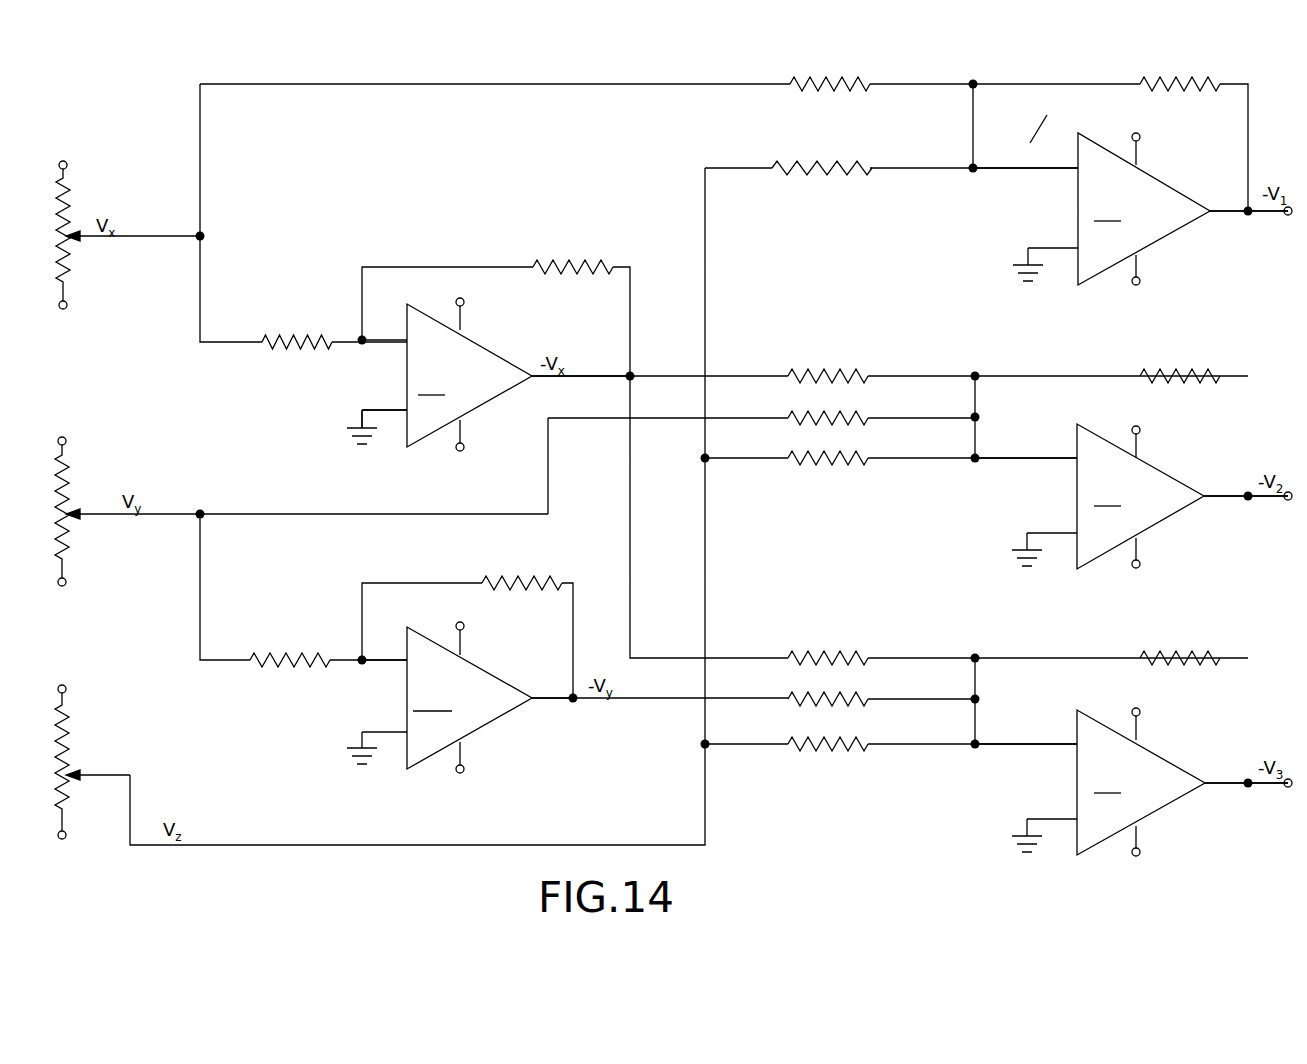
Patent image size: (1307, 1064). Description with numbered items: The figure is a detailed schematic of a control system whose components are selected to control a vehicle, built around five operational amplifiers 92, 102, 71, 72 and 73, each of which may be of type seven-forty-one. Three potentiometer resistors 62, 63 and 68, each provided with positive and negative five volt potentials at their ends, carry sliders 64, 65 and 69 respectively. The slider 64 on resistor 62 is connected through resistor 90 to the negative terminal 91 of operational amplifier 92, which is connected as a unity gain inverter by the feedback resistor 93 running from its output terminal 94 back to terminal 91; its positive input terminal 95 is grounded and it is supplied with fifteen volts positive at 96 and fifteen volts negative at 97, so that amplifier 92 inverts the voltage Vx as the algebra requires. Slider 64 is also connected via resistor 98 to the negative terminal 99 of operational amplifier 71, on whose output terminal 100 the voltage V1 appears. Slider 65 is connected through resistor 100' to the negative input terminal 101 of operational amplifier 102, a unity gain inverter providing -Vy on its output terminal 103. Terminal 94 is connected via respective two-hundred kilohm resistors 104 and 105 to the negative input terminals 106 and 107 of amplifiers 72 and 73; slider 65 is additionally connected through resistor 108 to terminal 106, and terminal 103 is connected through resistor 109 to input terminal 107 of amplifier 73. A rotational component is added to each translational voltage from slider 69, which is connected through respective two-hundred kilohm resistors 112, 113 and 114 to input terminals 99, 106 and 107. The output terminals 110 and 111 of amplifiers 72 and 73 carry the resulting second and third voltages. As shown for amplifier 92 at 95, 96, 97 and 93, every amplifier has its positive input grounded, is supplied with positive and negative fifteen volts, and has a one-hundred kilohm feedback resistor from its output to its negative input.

The resistor 62 is at (68, 278).
The resistor 63 is at (70, 470).
The slider 64 is at (145, 239).
The slider 65 is at (128, 520).
The resistor 68 is at (70, 738).
The slider 69 is at (130, 780).
The operational amplifier 71 is at (1149, 181).
The operational amplifier 72 is at (1148, 469).
The operational amplifier 73 is at (1148, 753).
The resistor 90 is at (302, 336).
The negative terminal 91 is at (377, 344).
The operational amplifier 92 is at (469, 375).
The feedback resistor 93 is at (592, 262).
The output terminal 94 is at (558, 385).
The positive input terminal 95 is at (364, 408).
The positive voltage supply terminal 96 is at (461, 316).
The negative voltage supply terminal 97 is at (461, 440).
The resistor 98 is at (838, 90).
The negative terminal 99 is at (1032, 170).
The output terminal 100 is at (1249, 225).
The resistor 100' is at (290, 646).
The negative input terminal 101 is at (377, 664).
The operational amplifier 102 is at (484, 674).
The output terminal 103 is at (541, 704).
The resistor 104 is at (857, 371).
The resistor 105 is at (853, 653).
The negative input terminal 106 is at (1050, 458).
The negative input terminal 107 is at (1053, 744).
The resistor 108 is at (838, 416).
The resistor 109 is at (864, 696).
The output 110 is at (1222, 494).
The output 111 is at (1218, 782).
The resistor 112 is at (858, 174).
The resistor 113 is at (850, 456).
The resistor 114 is at (848, 742).